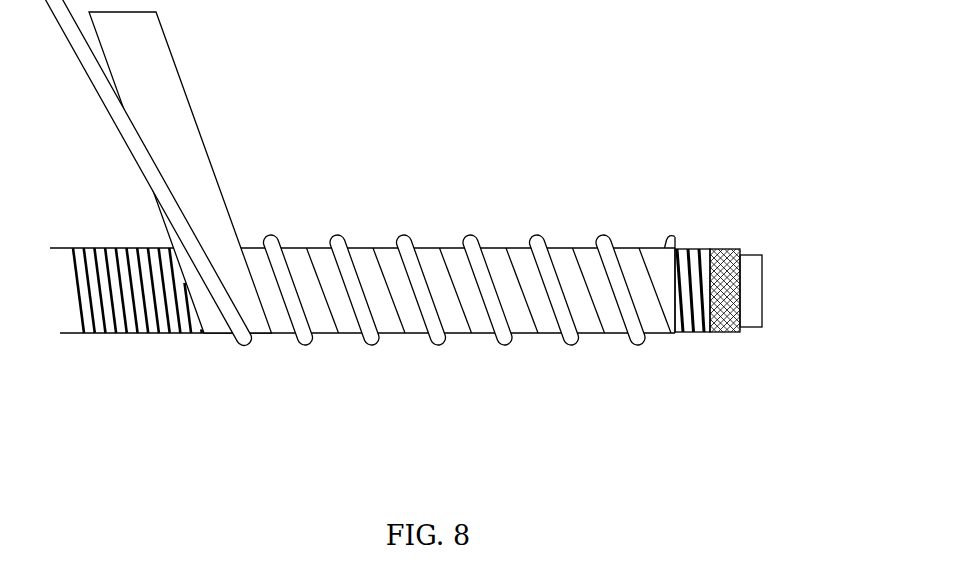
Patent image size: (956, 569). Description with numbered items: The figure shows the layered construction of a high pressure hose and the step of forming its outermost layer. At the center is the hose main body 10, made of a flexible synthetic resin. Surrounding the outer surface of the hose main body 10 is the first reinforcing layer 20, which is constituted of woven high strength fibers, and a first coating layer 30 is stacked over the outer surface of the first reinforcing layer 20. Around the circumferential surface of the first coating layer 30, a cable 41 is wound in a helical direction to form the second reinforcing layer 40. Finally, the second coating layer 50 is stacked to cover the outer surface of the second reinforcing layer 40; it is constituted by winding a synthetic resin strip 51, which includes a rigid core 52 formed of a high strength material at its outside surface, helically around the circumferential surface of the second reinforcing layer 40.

The hose main body 10 is at (763, 300).
The first reinforcing layer 20 is at (726, 331).
The first coating layer 30 is at (701, 249).
The second reinforcing layer 40 is at (133, 346).
The cable 41 is at (104, 321).
The second coating layer 50 is at (448, 228).
The synthetic resin strip 51 is at (207, 157).
The rigid core 52 is at (165, 140).